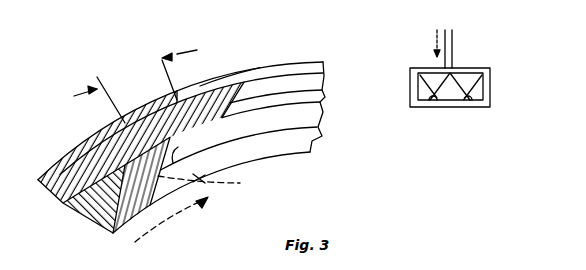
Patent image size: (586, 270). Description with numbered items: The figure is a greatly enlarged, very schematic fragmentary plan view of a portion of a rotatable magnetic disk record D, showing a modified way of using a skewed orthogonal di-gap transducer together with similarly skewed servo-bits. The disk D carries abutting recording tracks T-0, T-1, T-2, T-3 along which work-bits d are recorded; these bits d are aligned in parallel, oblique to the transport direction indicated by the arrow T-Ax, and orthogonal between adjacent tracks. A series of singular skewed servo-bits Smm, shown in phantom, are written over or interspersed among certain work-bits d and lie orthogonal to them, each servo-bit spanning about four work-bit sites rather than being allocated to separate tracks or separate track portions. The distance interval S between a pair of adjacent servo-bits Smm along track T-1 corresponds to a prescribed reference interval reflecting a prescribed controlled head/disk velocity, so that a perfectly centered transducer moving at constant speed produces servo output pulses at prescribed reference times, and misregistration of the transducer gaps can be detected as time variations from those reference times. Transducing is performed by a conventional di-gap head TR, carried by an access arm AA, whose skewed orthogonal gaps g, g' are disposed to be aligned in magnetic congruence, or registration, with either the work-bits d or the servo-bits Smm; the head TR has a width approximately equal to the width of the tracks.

The tread surface layer T-0 is at (325, 63).
The recording track T-1 is at (323, 90).
The recording track T-2 is at (321, 119).
The recording track T-3 is at (313, 145).
The magnetic disk record D is at (231, 73).
The interval S is at (135, 86).
The work-bits d is at (200, 126).
The skewed servo-bits Smm is at (218, 184).
The transport direction T-Ax is at (156, 228).
The di-gap head TR is at (491, 87).
The access arm AA is at (454, 56).
The skewed orthogonal gap g is at (435, 116).
The skewed orthogonal gap g' is at (479, 116).